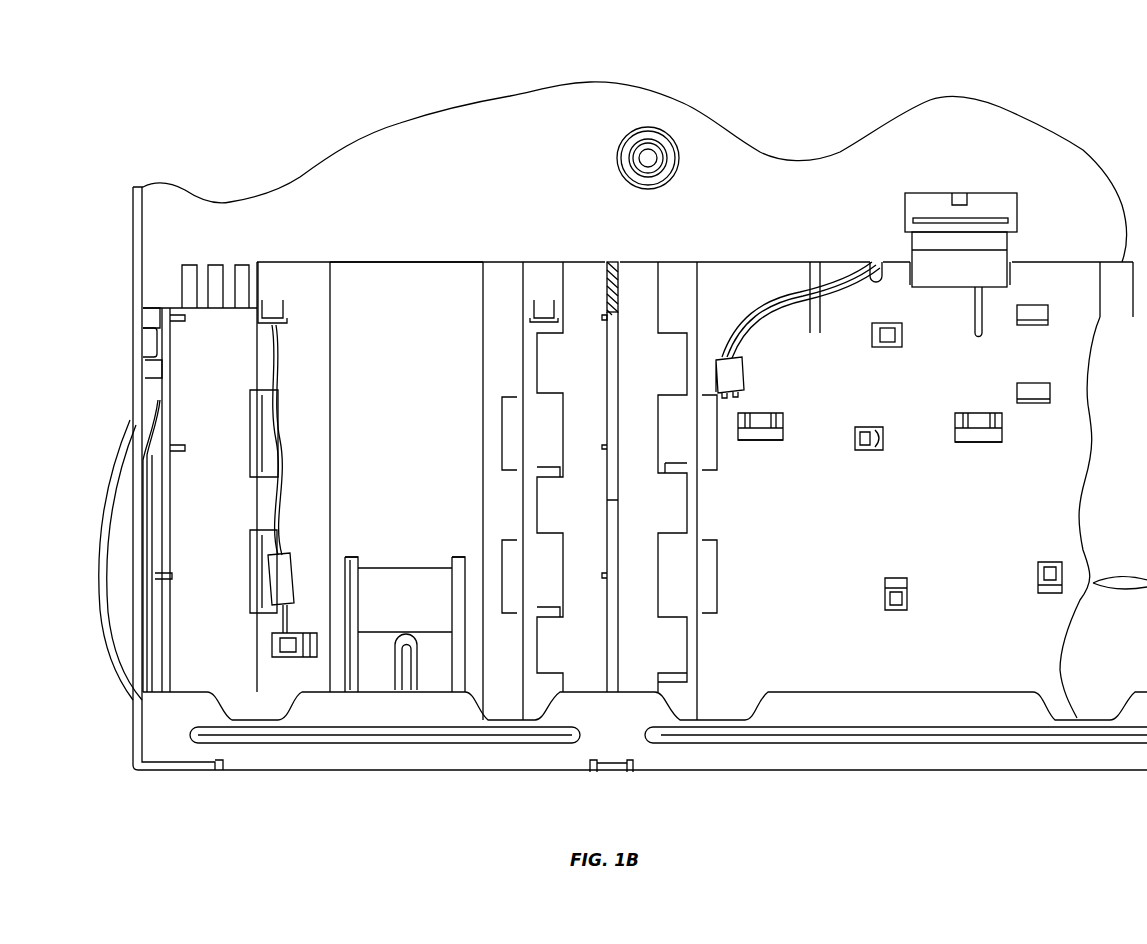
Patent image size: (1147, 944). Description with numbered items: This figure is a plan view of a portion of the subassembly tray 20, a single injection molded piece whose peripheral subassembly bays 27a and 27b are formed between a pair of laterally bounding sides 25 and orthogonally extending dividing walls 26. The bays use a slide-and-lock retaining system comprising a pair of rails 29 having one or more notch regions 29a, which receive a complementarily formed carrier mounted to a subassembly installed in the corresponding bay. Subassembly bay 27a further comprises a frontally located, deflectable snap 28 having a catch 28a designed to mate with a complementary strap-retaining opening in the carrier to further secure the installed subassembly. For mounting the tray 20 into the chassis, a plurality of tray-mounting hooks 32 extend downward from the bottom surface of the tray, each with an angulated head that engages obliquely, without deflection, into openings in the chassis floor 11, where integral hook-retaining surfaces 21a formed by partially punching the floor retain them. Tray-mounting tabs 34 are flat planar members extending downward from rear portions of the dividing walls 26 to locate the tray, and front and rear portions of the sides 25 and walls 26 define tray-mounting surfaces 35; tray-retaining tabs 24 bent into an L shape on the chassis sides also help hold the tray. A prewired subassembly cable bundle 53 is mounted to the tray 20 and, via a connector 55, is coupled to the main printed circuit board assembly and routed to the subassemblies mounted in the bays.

The subassembly tray 20 is at (227, 61).
The floor 11 is at (512, 180).
The rails 29 is at (583, 300).
The tray-mounting tabs 34 is at (612, 260).
The dividing walls 26 is at (612, 605).
The notch regions 29a is at (502, 575).
The subassembly bay 27a is at (410, 522).
The deflectable snap 28 is at (418, 610).
The catch 28a is at (413, 663).
The tray-mounting surfaces 35 is at (152, 305).
The tray-retaining tabs 24 is at (145, 343).
The laterally bounding sides 25 is at (165, 412).
The connector 55 is at (986, 205).
The subassembly cable bundle 53 is at (1005, 243).
The subassembly bay 27b is at (935, 528).
The tray-mounting hooks 32 is at (768, 420).
The hook-retaining surfaces 21a is at (760, 447).